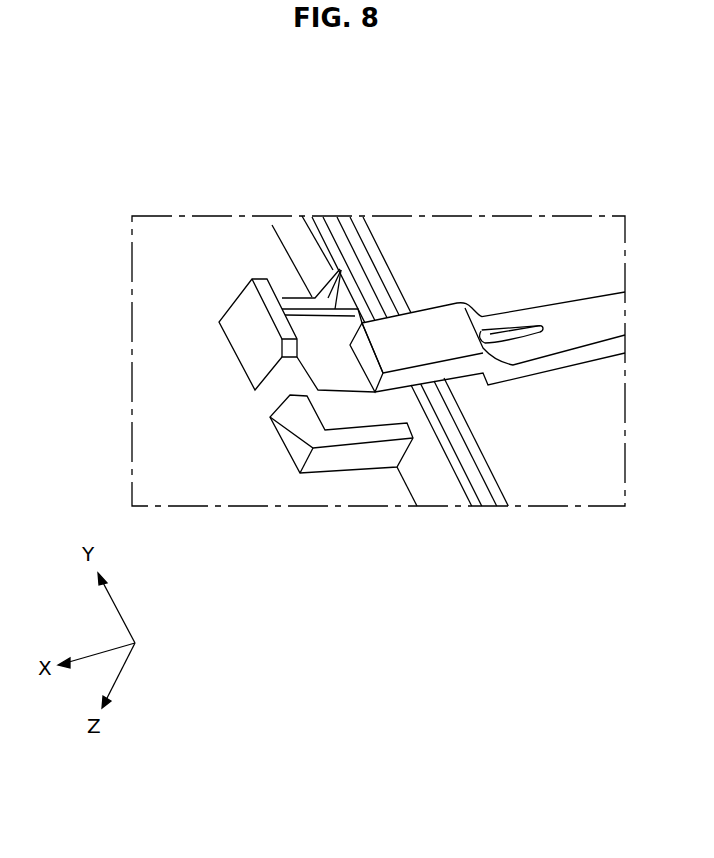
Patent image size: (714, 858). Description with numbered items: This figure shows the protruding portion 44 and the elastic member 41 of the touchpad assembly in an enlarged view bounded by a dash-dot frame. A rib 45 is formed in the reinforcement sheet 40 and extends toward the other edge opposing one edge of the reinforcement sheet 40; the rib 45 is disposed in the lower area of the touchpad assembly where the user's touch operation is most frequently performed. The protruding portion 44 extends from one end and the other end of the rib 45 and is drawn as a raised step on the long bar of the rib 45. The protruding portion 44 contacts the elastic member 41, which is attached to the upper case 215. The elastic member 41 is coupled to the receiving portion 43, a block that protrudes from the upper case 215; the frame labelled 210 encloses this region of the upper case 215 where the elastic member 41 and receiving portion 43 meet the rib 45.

The reinforcement sheet 40 is at (568, 475).
The elastic member 41 is at (333, 373).
The receiving portion 43 is at (250, 343).
The protruding portion 44 is at (438, 300).
The rib 45 is at (585, 312).
The housing 210 is at (210, 117).
The upper case 215 is at (173, 237).